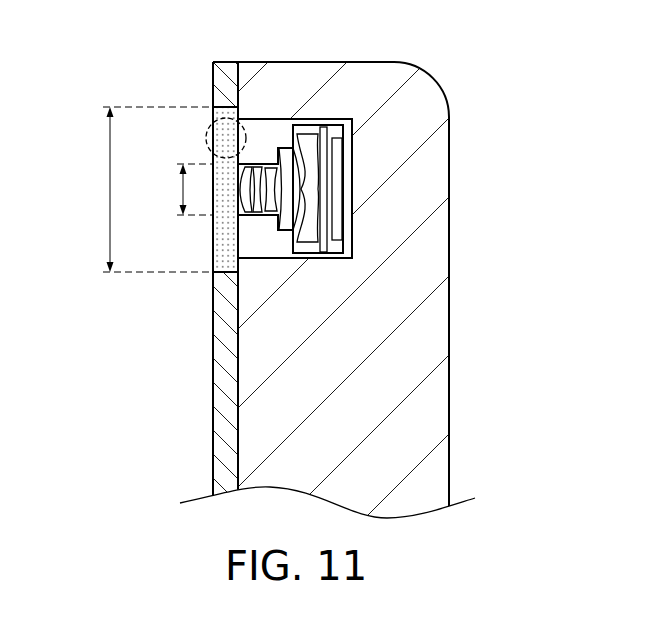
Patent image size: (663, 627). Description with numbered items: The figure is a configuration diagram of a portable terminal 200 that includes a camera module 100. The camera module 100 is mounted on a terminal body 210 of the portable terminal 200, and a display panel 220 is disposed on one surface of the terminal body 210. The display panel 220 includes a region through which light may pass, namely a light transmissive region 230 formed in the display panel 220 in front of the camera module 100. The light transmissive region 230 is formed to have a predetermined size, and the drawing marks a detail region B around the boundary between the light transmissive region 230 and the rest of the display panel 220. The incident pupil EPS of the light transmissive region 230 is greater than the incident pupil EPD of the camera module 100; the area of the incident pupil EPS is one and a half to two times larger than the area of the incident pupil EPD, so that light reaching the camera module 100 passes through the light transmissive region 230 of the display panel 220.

The camera module 100 is at (307, 110).
The portable terminal 200 is at (462, 57).
The terminal body 210 is at (433, 370).
The display panel 220 is at (228, 368).
The light transmissive region 230 is at (228, 272).
The detail region B is at (207, 131).
The incident pupil of the light transmissive region EPS is at (136, 189).
The incident pupil of the camera module EPD is at (171, 189).